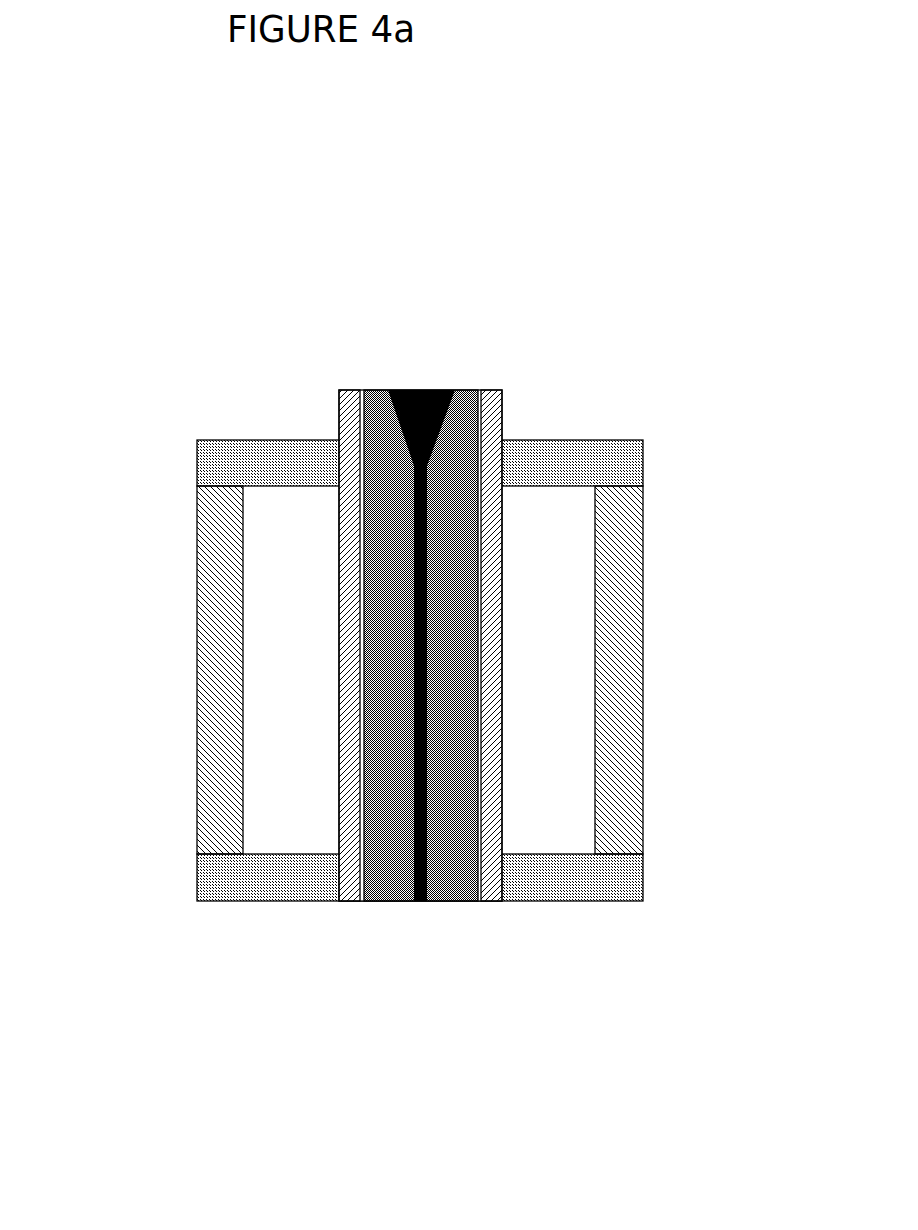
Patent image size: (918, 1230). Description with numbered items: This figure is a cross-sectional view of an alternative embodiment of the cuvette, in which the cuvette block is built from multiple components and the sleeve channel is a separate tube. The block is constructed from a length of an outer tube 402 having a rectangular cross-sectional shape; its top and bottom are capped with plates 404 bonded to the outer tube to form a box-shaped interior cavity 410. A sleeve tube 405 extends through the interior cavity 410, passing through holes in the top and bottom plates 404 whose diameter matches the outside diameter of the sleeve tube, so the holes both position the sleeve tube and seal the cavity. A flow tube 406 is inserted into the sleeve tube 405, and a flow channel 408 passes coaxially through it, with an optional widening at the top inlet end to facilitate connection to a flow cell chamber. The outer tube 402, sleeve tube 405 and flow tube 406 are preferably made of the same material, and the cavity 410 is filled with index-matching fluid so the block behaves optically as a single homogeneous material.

The outer tube 402 is at (189, 720).
The plates 404 is at (188, 462).
The sleeve tube 405 is at (512, 645).
The flow tube 406 is at (463, 380).
The flow channel 408 is at (430, 916).
The interior cavity 410 is at (267, 810).